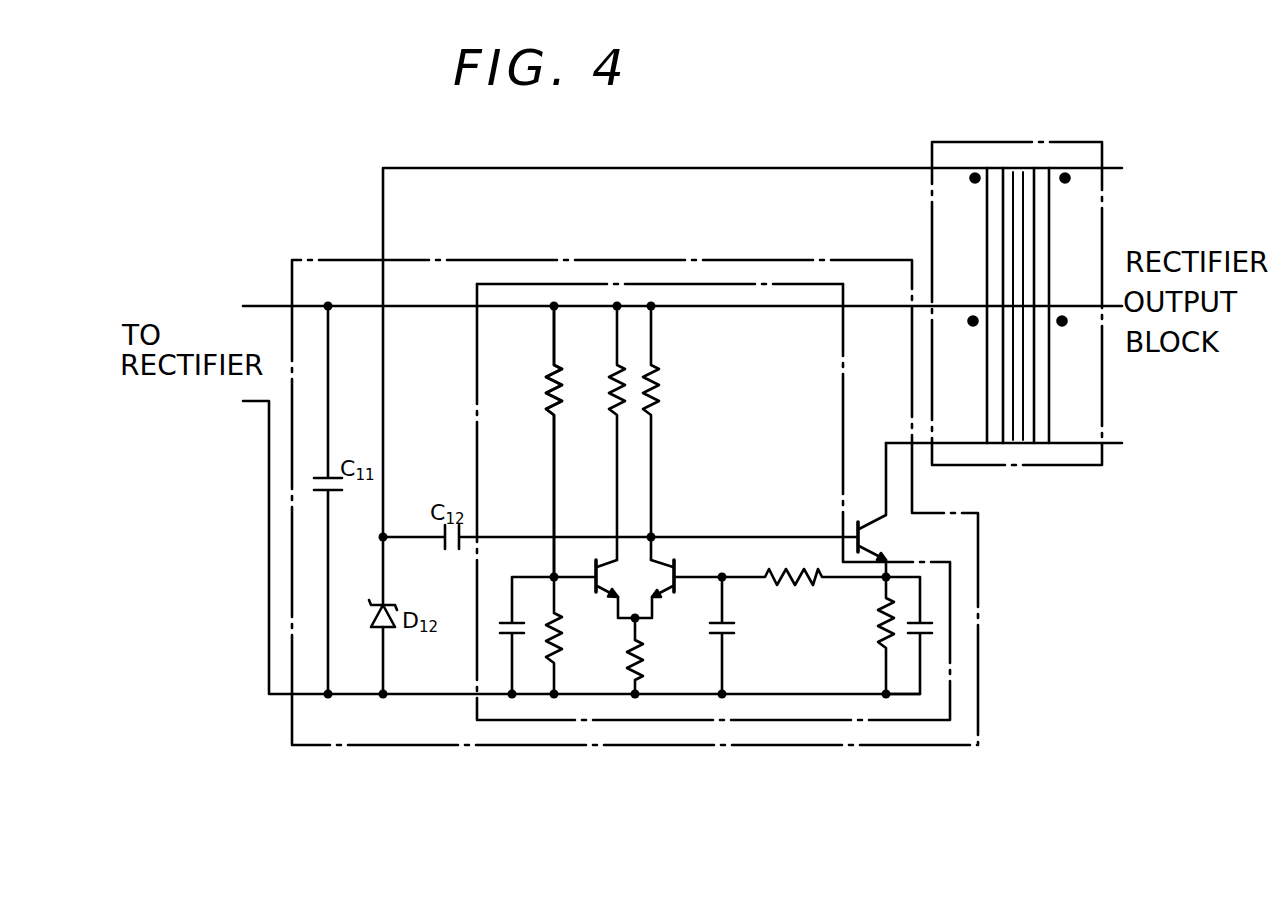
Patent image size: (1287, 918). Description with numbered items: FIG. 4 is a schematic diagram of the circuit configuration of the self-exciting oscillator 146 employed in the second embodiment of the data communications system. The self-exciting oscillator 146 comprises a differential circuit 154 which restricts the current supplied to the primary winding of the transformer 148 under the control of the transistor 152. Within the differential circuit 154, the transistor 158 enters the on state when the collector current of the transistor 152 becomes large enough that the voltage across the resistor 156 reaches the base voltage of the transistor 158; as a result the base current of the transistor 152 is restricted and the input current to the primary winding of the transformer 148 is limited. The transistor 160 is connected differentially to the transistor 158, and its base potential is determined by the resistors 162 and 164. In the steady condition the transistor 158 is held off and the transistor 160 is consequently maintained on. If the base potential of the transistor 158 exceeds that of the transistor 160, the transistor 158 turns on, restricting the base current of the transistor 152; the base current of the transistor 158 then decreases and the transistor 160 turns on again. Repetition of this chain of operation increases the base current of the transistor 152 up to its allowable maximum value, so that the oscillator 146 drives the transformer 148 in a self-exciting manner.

The self-exciting oscillator 146 is at (695, 746).
The transformer 148 is at (1028, 140).
The transistor 152 is at (912, 556).
The differential circuit 154 is at (718, 284).
The resistor 156 is at (872, 637).
The transistor 158 is at (665, 558).
The transistor 160 is at (610, 558).
The resistor 162 is at (540, 412).
The resistor 164 is at (543, 652).